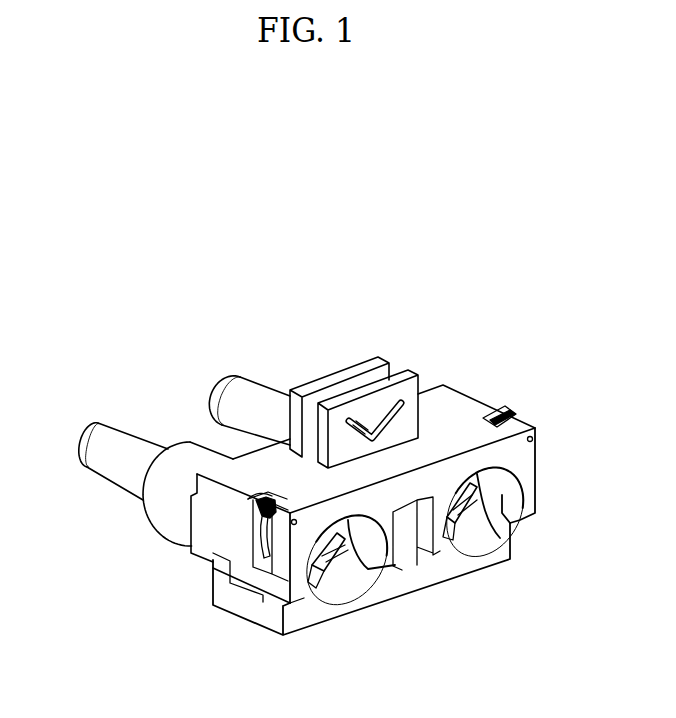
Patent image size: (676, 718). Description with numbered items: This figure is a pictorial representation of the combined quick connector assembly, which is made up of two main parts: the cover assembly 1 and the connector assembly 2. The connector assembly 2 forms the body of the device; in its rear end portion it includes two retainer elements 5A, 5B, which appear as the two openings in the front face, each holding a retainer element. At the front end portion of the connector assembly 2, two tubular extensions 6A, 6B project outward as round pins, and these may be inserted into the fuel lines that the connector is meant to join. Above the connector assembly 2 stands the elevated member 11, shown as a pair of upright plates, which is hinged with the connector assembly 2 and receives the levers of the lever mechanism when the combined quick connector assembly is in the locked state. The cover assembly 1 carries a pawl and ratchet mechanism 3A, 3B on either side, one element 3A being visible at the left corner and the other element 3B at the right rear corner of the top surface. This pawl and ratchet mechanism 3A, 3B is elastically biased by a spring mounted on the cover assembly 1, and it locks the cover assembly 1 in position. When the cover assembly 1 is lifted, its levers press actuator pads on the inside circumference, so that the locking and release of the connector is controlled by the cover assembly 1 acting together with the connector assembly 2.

The cover assembly 1 is at (536, 467).
The connector assembly 2 is at (502, 548).
The elevated member 11 is at (413, 384).
The pawl and ratchet mechanism 3A is at (236, 515).
The pawl and ratchet mechanism 3B is at (530, 398).
The retainer element 5A is at (321, 565).
The retainer element 5B is at (462, 522).
The tubular extension 6A is at (100, 440).
The tubular extension 6B is at (237, 393).